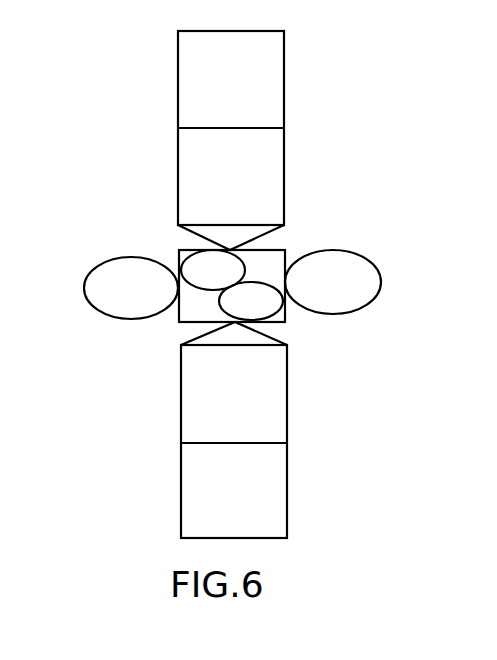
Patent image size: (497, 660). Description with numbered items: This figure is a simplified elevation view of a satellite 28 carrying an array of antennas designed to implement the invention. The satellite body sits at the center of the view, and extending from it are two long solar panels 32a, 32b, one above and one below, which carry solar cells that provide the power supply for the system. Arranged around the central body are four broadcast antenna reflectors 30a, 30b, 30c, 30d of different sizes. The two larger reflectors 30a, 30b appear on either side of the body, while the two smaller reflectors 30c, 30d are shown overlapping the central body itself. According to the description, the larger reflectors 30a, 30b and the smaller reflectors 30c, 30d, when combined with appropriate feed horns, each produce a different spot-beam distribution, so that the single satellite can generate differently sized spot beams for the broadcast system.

The satellite 28 is at (286, 259).
The broadcast antenna reflector 30a is at (121, 257).
The broadcast antenna reflector 30b is at (375, 263).
The broadcast antenna reflector 30c is at (184, 252).
The broadcast antenna reflector 30d is at (278, 318).
The panel 32a is at (178, 168).
The panel 32b is at (182, 500).